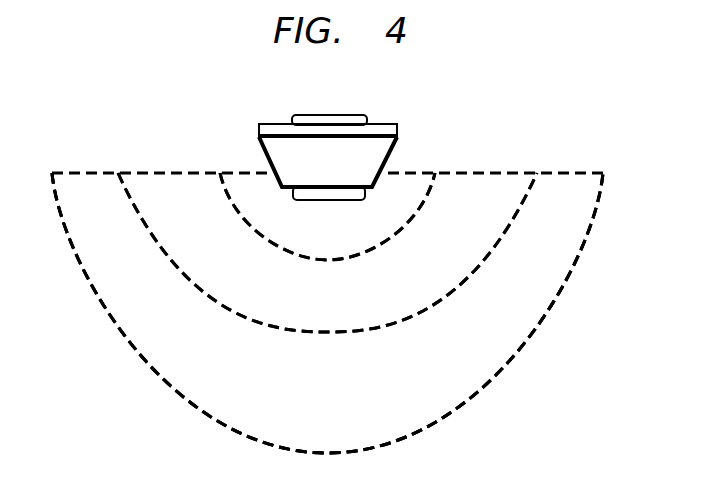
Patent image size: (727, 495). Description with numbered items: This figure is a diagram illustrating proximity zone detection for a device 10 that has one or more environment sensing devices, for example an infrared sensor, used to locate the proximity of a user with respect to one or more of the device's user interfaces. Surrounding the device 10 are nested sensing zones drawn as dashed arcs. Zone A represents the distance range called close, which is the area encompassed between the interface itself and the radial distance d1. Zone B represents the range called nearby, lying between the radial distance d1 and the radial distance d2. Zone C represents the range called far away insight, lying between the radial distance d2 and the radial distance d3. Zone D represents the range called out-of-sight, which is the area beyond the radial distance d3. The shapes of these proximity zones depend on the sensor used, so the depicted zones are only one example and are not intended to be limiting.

The device 10 is at (394, 124).
The radial distance d1 is at (336, 262).
The radial distance d2 is at (345, 333).
The radial distance d3 is at (343, 454).
The zone A is at (268, 219).
The zone B is at (239, 279).
The zone C is at (202, 359).
The zone D is at (168, 447).